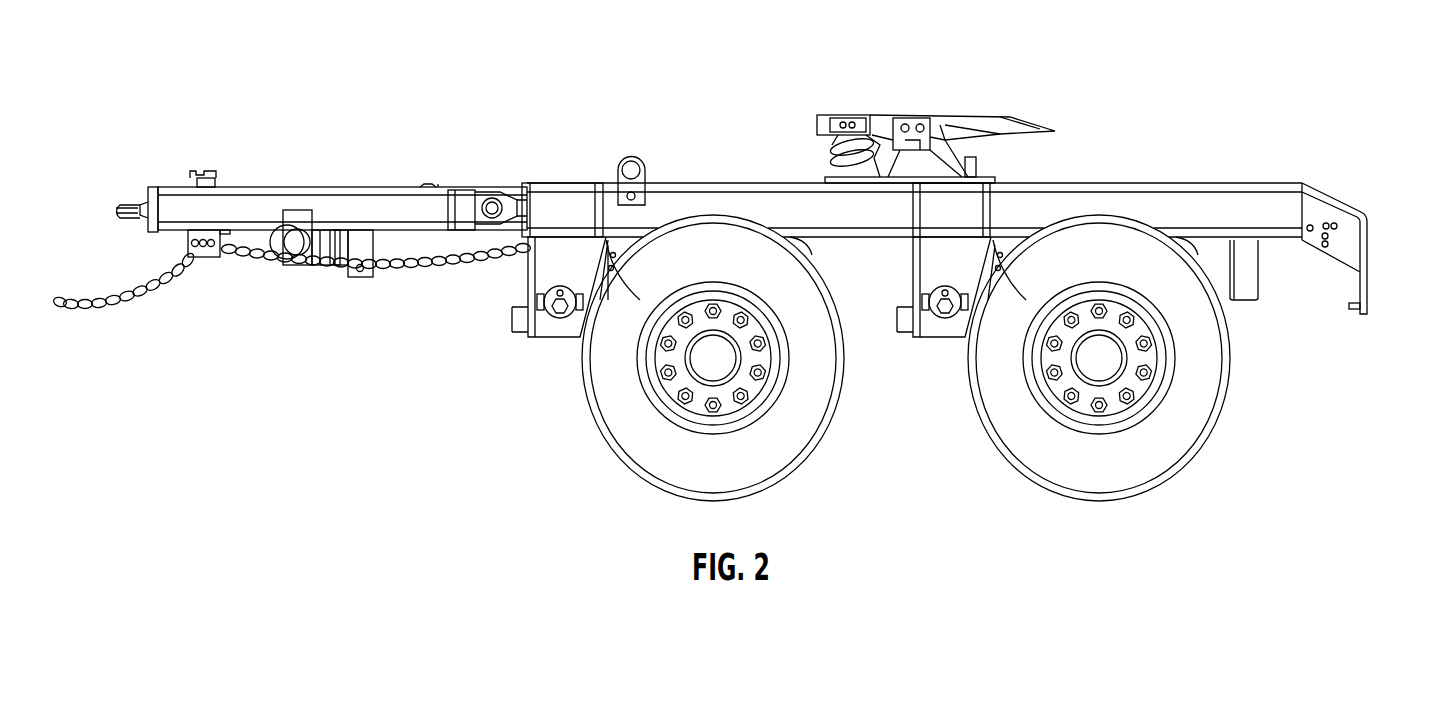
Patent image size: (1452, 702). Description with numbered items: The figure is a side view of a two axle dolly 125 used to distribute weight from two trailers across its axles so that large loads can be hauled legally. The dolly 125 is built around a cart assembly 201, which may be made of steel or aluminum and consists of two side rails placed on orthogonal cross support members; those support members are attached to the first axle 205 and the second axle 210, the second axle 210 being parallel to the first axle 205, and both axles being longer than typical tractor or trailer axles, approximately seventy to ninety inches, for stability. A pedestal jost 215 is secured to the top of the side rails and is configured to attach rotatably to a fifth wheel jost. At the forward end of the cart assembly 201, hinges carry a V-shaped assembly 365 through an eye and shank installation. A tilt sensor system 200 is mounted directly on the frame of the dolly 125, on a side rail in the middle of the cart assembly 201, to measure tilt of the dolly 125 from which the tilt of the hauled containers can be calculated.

The dolly 125 is at (1190, 78).
The tilt sensor system 200 is at (795, 178).
The cart assembly 201 is at (1377, 233).
The first axle 205 is at (727, 367).
The second axle 210 is at (1107, 367).
The pedestal jost 215 is at (928, 170).
The V-shaped assembly 365 is at (331, 200).